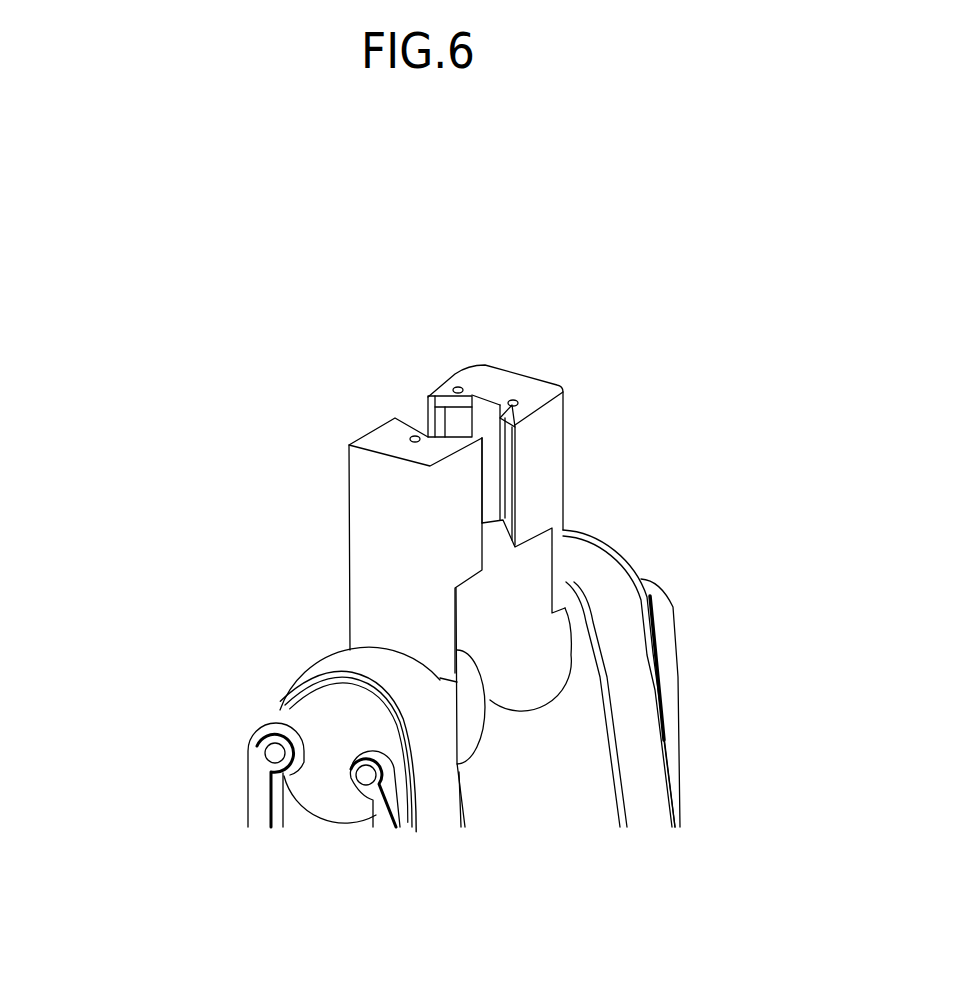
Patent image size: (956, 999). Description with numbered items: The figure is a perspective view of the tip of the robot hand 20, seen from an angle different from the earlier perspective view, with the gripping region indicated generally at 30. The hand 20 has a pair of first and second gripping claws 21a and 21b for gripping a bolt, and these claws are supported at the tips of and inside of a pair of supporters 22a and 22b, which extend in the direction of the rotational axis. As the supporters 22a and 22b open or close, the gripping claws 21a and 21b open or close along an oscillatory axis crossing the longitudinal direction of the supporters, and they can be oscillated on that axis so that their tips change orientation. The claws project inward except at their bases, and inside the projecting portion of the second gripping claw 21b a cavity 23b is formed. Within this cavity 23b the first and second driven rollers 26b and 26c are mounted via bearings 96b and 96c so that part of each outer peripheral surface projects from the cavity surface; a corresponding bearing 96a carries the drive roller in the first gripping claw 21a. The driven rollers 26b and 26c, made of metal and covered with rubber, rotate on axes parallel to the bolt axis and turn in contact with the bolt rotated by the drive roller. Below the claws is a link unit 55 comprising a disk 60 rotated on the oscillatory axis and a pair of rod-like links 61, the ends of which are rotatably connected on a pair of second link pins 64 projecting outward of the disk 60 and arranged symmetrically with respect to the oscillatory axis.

The hand 20 is at (240, 220).
The block assembly 30 is at (413, 347).
The first gripping claw 21a is at (368, 497).
The second gripping claw 21b is at (552, 442).
The second driven roller 26c is at (458, 425).
The first driven roller 26b is at (508, 468).
The cavity 23b is at (490, 405).
The bearing 96a is at (408, 440).
The bearing 96b is at (517, 400).
The bearing 96c is at (457, 386).
The supporter 22a is at (440, 803).
The supporter 22b is at (635, 663).
The link unit 55 is at (247, 867).
The disk 60 is at (330, 802).
The link 61 is at (263, 780).
The second link pin 64 is at (360, 757).